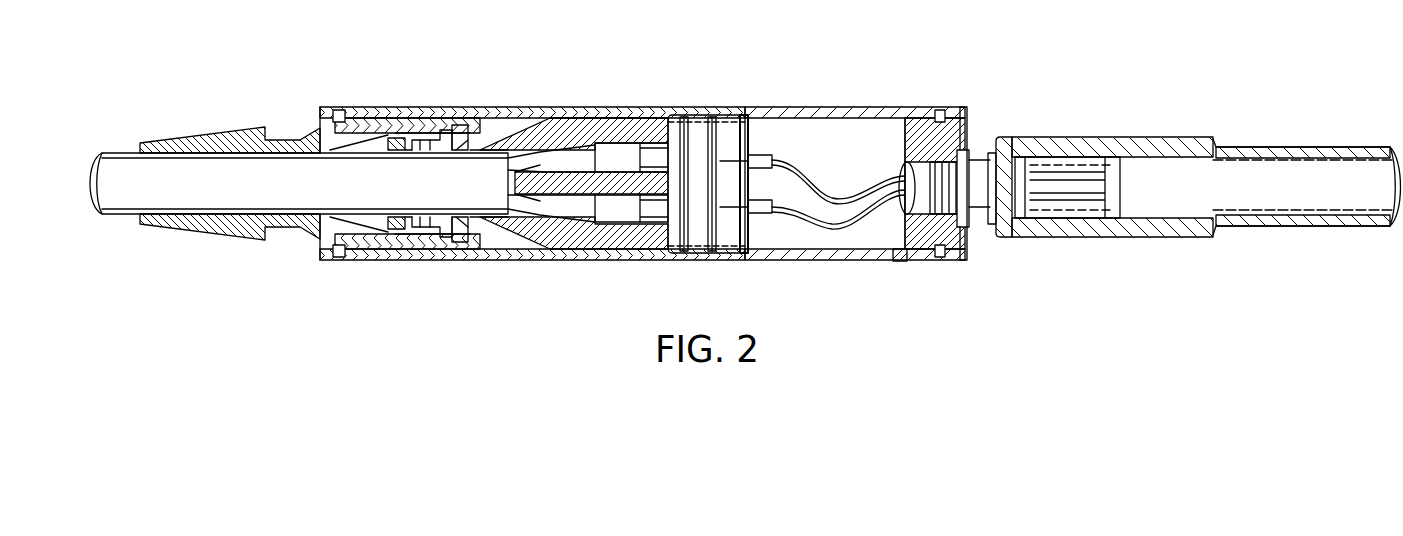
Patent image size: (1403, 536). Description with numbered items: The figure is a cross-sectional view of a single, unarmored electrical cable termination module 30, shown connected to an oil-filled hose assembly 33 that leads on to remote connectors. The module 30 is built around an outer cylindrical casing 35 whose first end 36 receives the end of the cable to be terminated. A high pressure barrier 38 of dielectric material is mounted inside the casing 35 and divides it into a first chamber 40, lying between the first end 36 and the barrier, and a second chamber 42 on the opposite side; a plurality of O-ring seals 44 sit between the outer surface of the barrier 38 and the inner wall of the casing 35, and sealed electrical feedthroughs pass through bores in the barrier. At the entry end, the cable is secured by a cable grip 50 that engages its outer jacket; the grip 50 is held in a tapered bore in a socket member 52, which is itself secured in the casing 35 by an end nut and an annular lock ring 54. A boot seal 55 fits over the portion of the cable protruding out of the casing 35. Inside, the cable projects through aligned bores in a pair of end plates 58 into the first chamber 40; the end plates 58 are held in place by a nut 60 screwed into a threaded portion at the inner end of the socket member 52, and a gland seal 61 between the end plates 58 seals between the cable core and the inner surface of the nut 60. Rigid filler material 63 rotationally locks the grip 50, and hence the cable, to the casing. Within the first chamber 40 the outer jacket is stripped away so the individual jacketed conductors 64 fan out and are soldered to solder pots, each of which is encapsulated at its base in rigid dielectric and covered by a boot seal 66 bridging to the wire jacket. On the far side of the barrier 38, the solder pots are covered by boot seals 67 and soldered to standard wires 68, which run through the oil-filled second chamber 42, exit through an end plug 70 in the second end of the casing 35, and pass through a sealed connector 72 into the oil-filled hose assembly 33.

The cable termination module 30 is at (832, 96).
The oil-filled hose assembly 33 is at (1165, 140).
The outer cylindrical casing 35 is at (505, 112).
The first end 36 is at (320, 250).
The high pressure barrier 38 is at (738, 158).
The first chamber 40 is at (590, 125).
The second chamber 42 is at (862, 128).
The O-ring seals 44 is at (715, 250).
The cable grip 50 is at (382, 225).
The socket member 52 is at (320, 110).
The annular lock ring 54 is at (335, 262).
The boot seal 55 is at (232, 222).
The end plates 58 is at (460, 235).
The nut 60 is at (488, 130).
The gland seal 61 is at (445, 138).
The rigid filler material 63 is at (405, 138).
The conductors 64 is at (562, 198).
The boot seal 66 is at (657, 167).
The boot seals 67 is at (762, 207).
The standard wires 68 is at (875, 190).
The end plug 70 is at (965, 128).
The sealed connector 72 is at (975, 205).